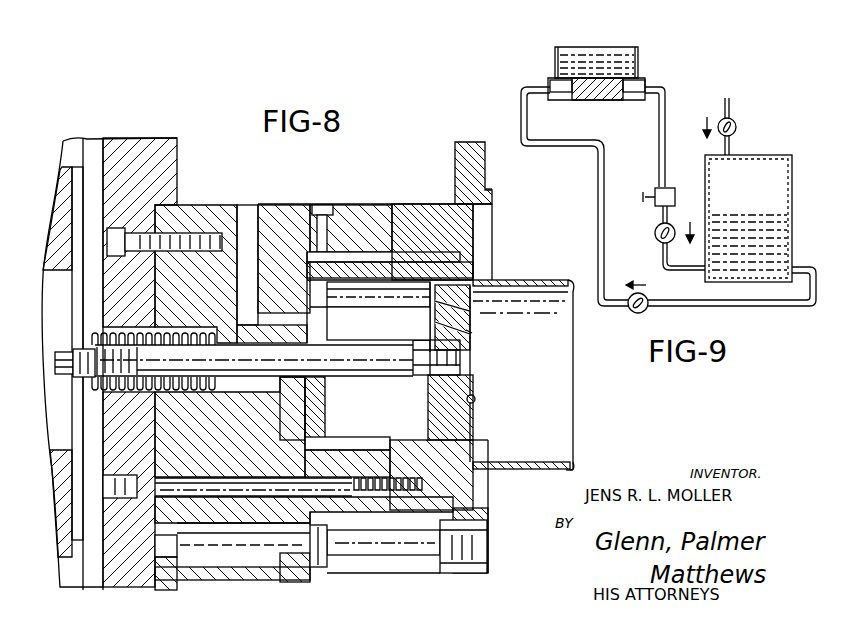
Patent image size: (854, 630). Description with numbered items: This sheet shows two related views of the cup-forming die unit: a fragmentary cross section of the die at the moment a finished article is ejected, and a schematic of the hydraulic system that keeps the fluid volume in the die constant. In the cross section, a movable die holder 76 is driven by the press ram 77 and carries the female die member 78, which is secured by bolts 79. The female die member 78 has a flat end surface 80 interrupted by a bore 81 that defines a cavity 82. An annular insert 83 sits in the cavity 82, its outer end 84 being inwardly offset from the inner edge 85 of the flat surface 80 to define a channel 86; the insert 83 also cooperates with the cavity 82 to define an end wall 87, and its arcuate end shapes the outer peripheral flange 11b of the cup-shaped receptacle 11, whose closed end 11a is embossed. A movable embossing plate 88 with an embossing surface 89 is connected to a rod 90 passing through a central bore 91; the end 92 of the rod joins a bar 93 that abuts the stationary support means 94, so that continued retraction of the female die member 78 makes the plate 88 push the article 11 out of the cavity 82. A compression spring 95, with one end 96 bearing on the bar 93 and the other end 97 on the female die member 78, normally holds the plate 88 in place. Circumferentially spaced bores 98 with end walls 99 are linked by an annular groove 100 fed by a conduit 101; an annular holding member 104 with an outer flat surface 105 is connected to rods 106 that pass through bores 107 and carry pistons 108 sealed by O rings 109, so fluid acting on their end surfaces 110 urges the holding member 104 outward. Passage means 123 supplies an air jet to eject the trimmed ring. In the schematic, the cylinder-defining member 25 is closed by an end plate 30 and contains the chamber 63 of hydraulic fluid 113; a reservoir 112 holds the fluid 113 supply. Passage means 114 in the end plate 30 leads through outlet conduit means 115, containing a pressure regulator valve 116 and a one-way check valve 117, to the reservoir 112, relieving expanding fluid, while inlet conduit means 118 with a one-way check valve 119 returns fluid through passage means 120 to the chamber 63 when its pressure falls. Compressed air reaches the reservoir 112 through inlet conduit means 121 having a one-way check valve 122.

In FIG. 8, the cup-shaped receptacle 11 is at (551, 276).
In FIG. 8, the closed end 11a is at (470, 331).
In FIG. 8, the outer peripheral flange 11b is at (571, 458).
In FIG. 9, the cylinder-defining member 25 is at (640, 62).
In FIG. 9, the end plate 30 is at (588, 98).
In FIG. 9, the chamber 63 is at (618, 58).
In FIG. 8, the die holder 76 is at (172, 150).
In FIG. 8, the press ram 77 is at (85, 142).
In FIG. 8, the female die member 78 is at (292, 210).
In FIG. 8, the bolts 79 is at (187, 232).
In FIG. 8, the flat end surface 80 is at (475, 240).
In FIG. 8, the bore 81 is at (425, 447).
In FIG. 8, the cavity 82 is at (360, 297).
In FIG. 8, the annular insert 83 is at (365, 440).
In FIG. 8, the outer end 84 is at (470, 283).
In FIG. 8, the inner edge 85 is at (488, 446).
In FIG. 8, the channel 86 is at (482, 440).
In FIG. 8, the end wall 87 is at (325, 413).
In FIG. 8, the embossing plate 88 is at (428, 398).
In FIG. 8, the embossing surface 89 is at (476, 395).
In FIG. 8, the rod 90 is at (350, 347).
In FIG. 8, the central bore 91 is at (270, 378).
In FIG. 8, the end 92 is at (123, 385).
In FIG. 8, the bar 93 is at (78, 203).
In FIG. 8, the stationary support means 94 is at (68, 185).
In FIG. 8, the compression spring 95 is at (170, 333).
In FIG. 8, the end 96 is at (88, 394).
In FIG. 8, the end 97 is at (220, 343).
In FIG. 8, the bores 98 is at (204, 527).
In FIG. 8, the end walls 99 is at (335, 533).
In FIG. 8, the annular groove 100 is at (163, 535).
In FIG. 8, the conduit 101 is at (178, 562).
In FIG. 8, the annular holding member 104 is at (455, 150).
In FIG. 8, the outer flat surface 105 is at (492, 197).
In FIG. 8, the rods 106 is at (395, 553).
In FIG. 8, the bores 107 is at (340, 555).
In FIG. 8, the piston 108 is at (305, 572).
In FIG. 8, the O ring 109 is at (317, 523).
In FIG. 8, the end surfaces 110 is at (310, 541).
In FIG. 9, the reservoir 112 is at (761, 155).
In FIG. 9, the hydraulic fluid 113 is at (583, 52).
In FIG. 9, the passage means 114 is at (630, 97).
In FIG. 9, the outlet conduit means 115 is at (665, 105).
In FIG. 9, the pressure regulator valve 116 is at (665, 192).
In FIG. 9, the one-way check valve 117 is at (666, 246).
In FIG. 9, the inlet conduit means 118 is at (597, 205).
In FIG. 9, the one-way check valve 119 is at (642, 310).
In FIG. 9, the passage means 120 is at (565, 93).
In FIG. 9, the inlet conduit means 121 is at (736, 100).
In FIG. 9, the one-way check valve 122 is at (736, 124).
In FIG. 8, the passage means 123 is at (345, 250).